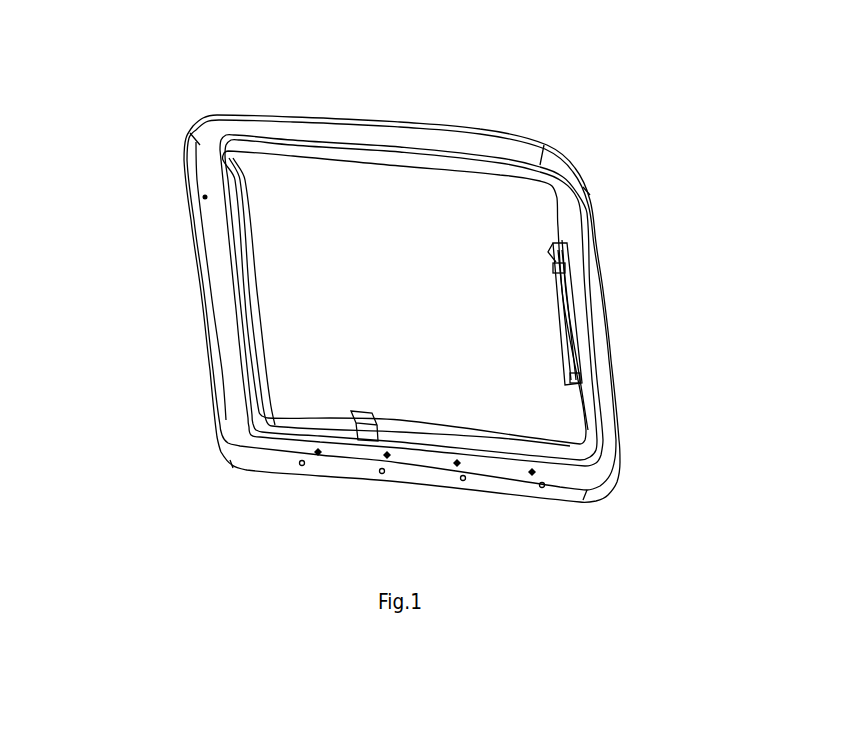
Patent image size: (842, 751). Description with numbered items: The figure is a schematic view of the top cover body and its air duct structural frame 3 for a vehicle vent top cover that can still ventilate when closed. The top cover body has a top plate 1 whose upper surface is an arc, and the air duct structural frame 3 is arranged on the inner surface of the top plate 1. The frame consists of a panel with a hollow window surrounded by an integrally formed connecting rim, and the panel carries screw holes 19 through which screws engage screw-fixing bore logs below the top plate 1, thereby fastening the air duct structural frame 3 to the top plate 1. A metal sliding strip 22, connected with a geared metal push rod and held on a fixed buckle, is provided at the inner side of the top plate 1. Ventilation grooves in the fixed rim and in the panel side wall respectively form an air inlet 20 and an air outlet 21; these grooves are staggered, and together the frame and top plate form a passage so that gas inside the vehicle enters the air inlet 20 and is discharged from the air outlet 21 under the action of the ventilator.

The top plate 1 is at (395, 122).
The air duct structural frame 3 is at (213, 233).
The screw holes 19 is at (217, 258).
The air inlet 20 is at (243, 217).
The air outlet 21 is at (217, 365).
The metal sliding strip 22 is at (560, 320).